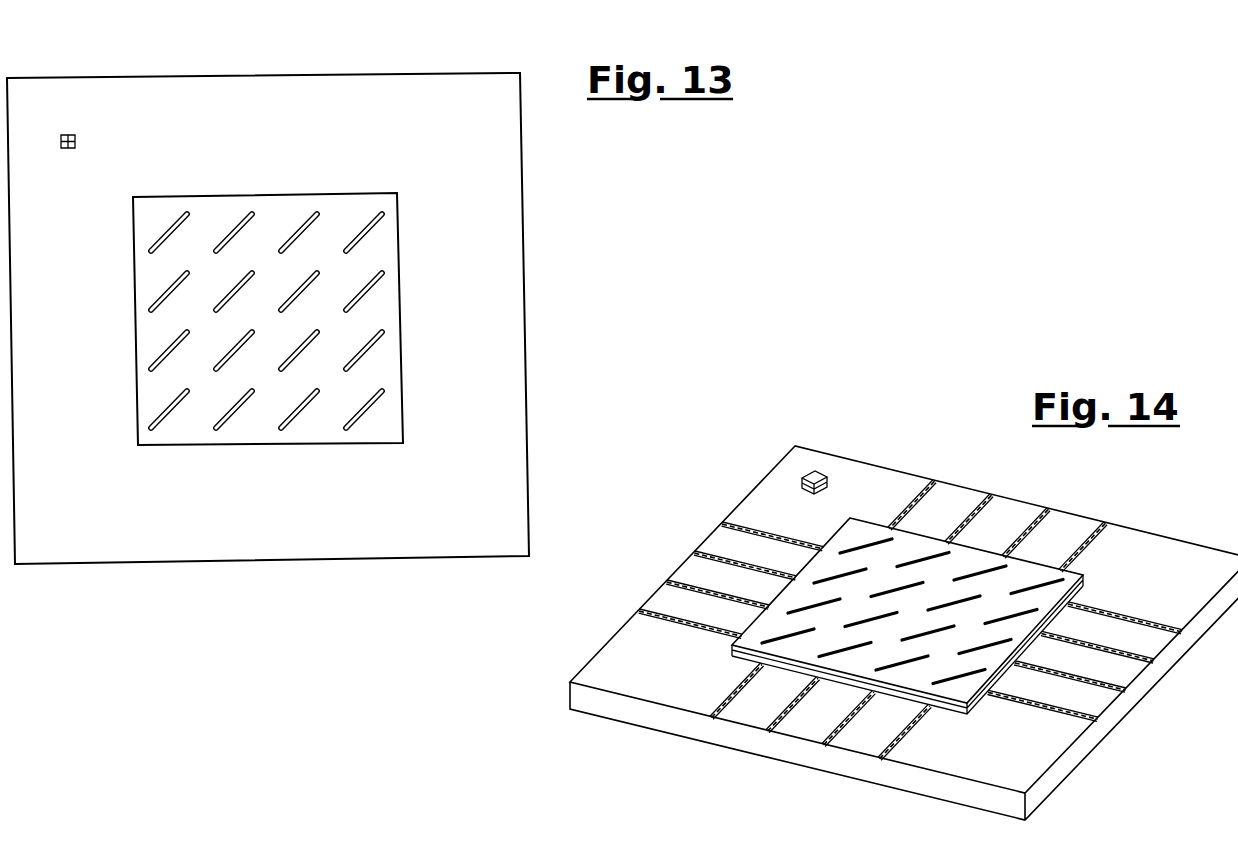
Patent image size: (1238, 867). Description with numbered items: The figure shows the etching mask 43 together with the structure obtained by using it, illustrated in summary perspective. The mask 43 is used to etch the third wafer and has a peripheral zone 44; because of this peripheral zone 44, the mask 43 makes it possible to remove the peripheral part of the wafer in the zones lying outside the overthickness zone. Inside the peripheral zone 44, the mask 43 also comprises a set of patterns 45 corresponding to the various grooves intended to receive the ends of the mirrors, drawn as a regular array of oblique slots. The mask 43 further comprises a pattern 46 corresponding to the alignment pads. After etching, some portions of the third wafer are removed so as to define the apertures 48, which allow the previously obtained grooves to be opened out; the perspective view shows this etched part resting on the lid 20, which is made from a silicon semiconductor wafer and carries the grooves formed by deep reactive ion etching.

In FIG. 14, the lid 20 is at (969, 480).
In FIG. 13, the mask 43 is at (313, 318).
In FIG. 13, the peripheral zone 44 is at (480, 257).
In FIG. 13, the set of patterns 45 is at (378, 334).
In FIG. 13, the pattern 46 is at (78, 137).
In FIG. 14, the apertures 48 is at (880, 540).